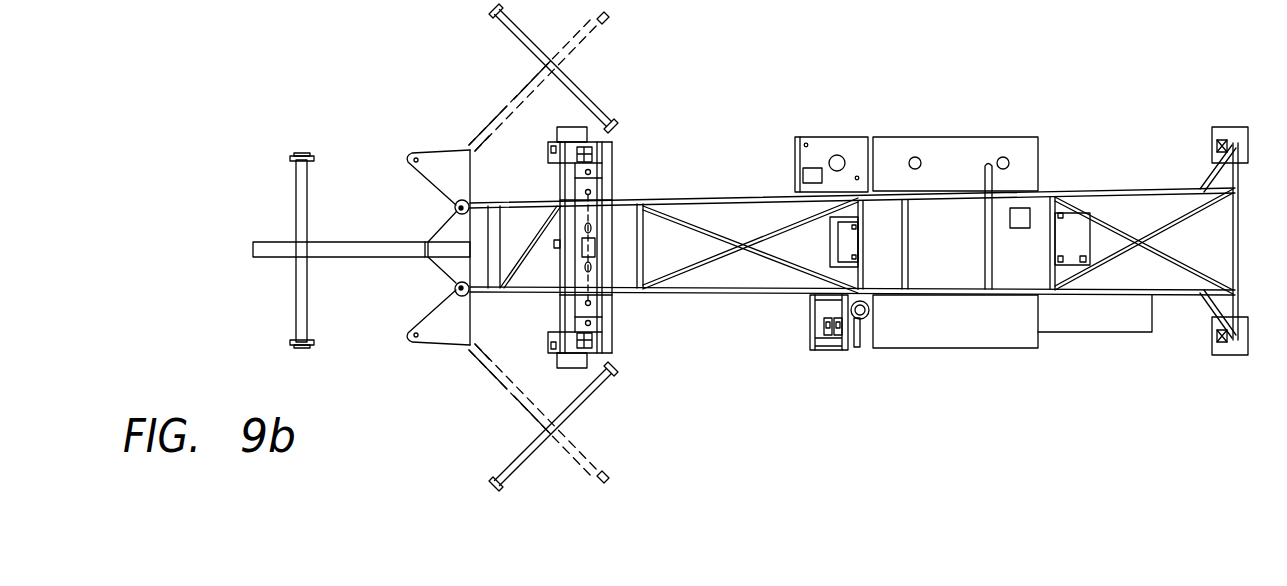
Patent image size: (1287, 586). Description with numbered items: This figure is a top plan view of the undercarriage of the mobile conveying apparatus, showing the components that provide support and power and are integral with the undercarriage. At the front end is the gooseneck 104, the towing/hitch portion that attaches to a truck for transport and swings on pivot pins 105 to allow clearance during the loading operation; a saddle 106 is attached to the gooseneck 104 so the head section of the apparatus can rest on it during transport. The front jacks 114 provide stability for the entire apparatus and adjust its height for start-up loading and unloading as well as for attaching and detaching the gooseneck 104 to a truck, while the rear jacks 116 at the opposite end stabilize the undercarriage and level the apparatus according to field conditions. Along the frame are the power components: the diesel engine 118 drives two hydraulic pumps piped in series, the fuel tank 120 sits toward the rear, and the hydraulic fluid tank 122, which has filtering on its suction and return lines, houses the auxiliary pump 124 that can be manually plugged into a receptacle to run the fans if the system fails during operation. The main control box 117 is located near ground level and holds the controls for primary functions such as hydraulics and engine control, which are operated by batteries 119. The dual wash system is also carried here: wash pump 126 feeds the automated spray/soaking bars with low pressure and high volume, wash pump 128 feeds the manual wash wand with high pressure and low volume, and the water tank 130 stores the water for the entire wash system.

The gooseneck 104 is at (377, 242).
The pivot pins 105 is at (470, 203).
The saddle 106 is at (295, 190).
The front jacks 114 is at (553, 125).
The rear jacks 116 is at (1217, 138).
The main control box 117 is at (1095, 333).
The diesel engine 118 is at (820, 328).
The batteries 119 is at (828, 254).
The fuel tank 120 is at (1092, 236).
The hydraulic fluid tank 122 is at (806, 138).
The auxiliary pump 124 is at (840, 155).
The wash pump 126 is at (915, 157).
The wash pump 128 is at (1005, 157).
The water tank 130 is at (1032, 217).